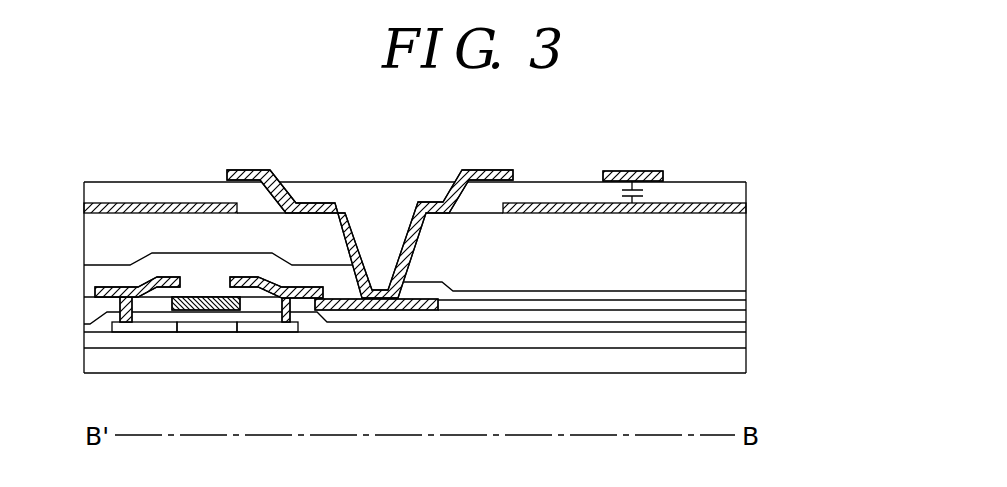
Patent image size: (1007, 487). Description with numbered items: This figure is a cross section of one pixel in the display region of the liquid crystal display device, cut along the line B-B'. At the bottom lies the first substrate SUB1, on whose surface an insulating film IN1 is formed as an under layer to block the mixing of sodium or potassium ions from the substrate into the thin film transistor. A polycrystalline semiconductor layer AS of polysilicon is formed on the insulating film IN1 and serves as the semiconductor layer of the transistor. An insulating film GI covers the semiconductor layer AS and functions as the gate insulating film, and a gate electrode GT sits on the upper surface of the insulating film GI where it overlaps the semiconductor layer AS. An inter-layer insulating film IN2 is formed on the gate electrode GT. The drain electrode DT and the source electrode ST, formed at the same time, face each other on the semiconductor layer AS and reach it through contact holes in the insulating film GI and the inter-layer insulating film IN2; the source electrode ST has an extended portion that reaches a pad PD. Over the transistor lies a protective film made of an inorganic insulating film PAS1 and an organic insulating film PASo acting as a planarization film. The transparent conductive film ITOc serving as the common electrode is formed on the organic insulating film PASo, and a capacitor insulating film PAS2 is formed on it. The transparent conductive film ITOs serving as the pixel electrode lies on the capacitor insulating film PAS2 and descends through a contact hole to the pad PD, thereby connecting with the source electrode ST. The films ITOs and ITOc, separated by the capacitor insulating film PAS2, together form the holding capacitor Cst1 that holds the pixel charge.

The transparent conductive film serving as the common electrode ITOc is at (127, 203).
The gate electrode GT is at (207, 297).
The transparent conductive film serving as the pixel electrode ITOs is at (276, 176).
The source electrode ST is at (252, 277).
The drain electrode DT is at (102, 287).
The semiconductor layer AS is at (205, 333).
The pad PD is at (414, 311).
The holding capacitor Cst1 is at (649, 213).
The capacitor insulating film PAS2 is at (746, 187).
The organic insulating film PASo is at (746, 247).
The inorganic insulating film PAS1 is at (746, 295).
The inter-layer insulating film IN2 is at (746, 312).
The insulating film GI is at (746, 327).
The insulating film IN1 is at (746, 343).
The first substrate SUB1 is at (746, 367).